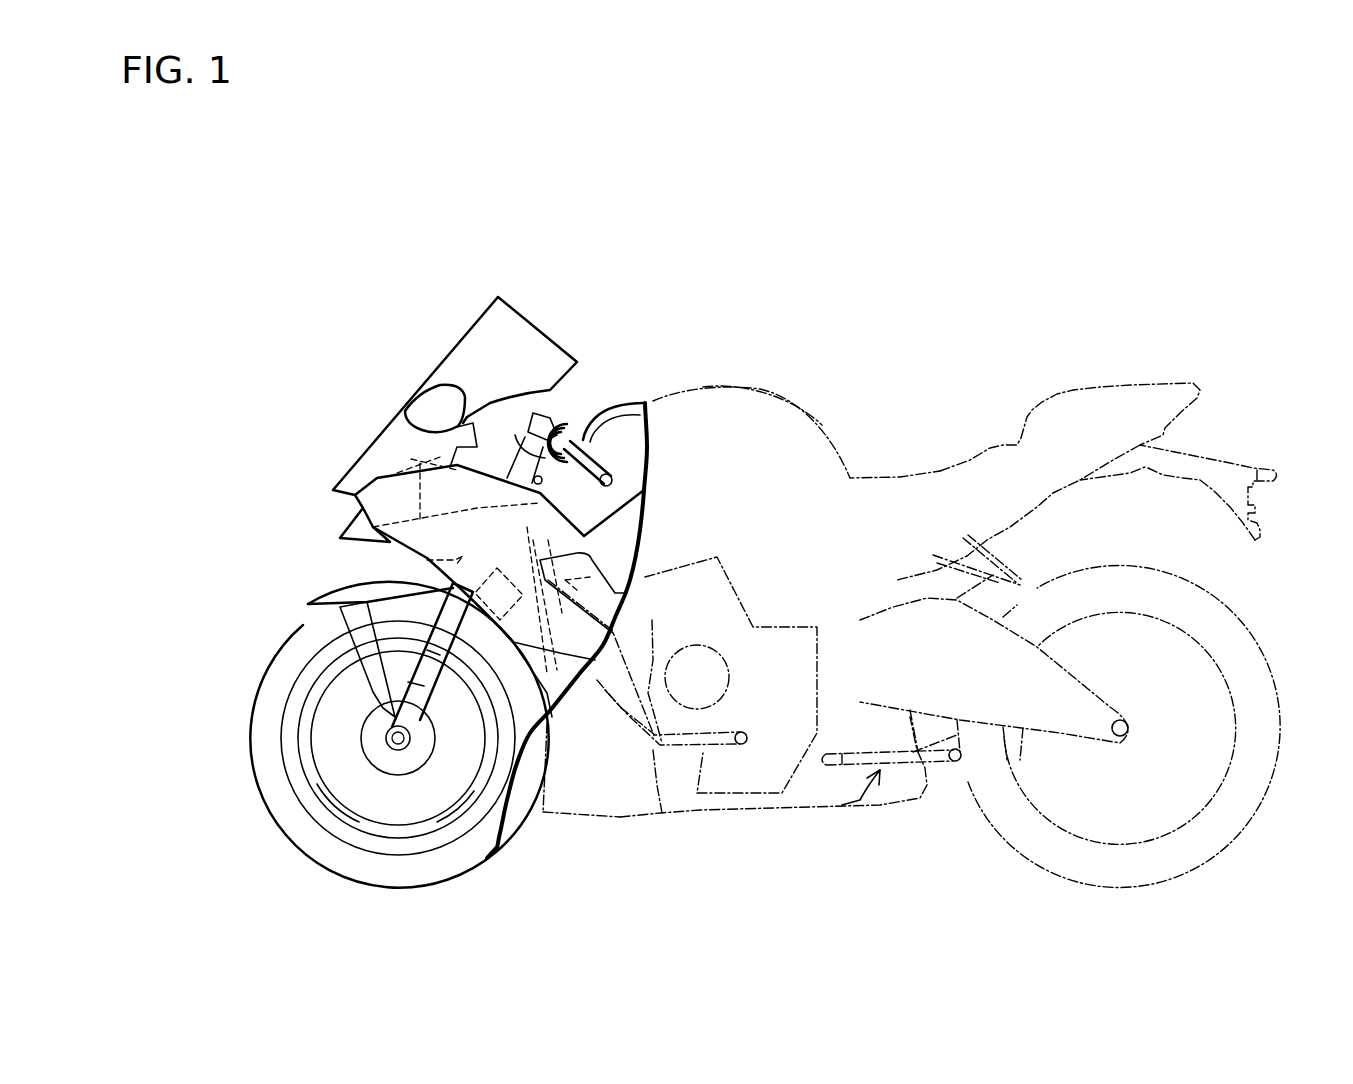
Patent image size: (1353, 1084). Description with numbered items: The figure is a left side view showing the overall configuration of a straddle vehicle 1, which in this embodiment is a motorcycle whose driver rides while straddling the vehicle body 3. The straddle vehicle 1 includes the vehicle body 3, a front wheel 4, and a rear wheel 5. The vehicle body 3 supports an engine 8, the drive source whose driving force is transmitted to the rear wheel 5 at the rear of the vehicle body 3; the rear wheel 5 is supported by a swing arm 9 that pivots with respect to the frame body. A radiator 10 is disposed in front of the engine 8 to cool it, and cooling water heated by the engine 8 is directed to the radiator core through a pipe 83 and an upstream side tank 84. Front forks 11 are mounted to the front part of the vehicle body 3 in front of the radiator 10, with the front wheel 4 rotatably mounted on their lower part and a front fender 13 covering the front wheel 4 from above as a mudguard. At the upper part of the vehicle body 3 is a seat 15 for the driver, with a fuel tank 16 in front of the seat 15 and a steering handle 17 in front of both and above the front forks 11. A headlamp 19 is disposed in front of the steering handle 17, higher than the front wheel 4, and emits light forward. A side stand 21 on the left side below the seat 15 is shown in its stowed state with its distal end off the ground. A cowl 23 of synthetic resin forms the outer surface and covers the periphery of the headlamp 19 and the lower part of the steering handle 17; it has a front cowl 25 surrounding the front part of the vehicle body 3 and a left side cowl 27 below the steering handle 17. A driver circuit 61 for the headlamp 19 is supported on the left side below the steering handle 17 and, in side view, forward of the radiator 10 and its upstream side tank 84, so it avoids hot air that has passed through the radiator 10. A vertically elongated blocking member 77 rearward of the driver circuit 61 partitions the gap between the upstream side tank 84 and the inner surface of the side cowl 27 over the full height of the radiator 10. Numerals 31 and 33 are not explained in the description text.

The straddle vehicle 1 is at (178, 227).
The vehicle body 3 is at (817, 828).
The front wheel 4 is at (302, 837).
The rear wheel 5 is at (1228, 843).
The engine 8 is at (673, 760).
The swing arm 9 is at (1018, 770).
The radiator 10 is at (657, 533).
The front forks 11 is at (355, 640).
The front fender 13 is at (330, 598).
The seat 15 is at (942, 471).
The fuel tank 16 is at (754, 388).
The steering handle 17 is at (590, 467).
The headlamp 19 is at (360, 508).
The side stand 21 is at (908, 763).
The cowl 23 is at (427, 568).
The front cowl 25 is at (357, 457).
The side cowl 27 is at (437, 490).
The windshield 31 is at (505, 317).
The rear view mirror 33 is at (433, 397).
The driver circuit 61 is at (558, 727).
The blocking member 77 is at (652, 593).
The pipe 83 is at (707, 747).
The upstream side tank 84 is at (653, 488).